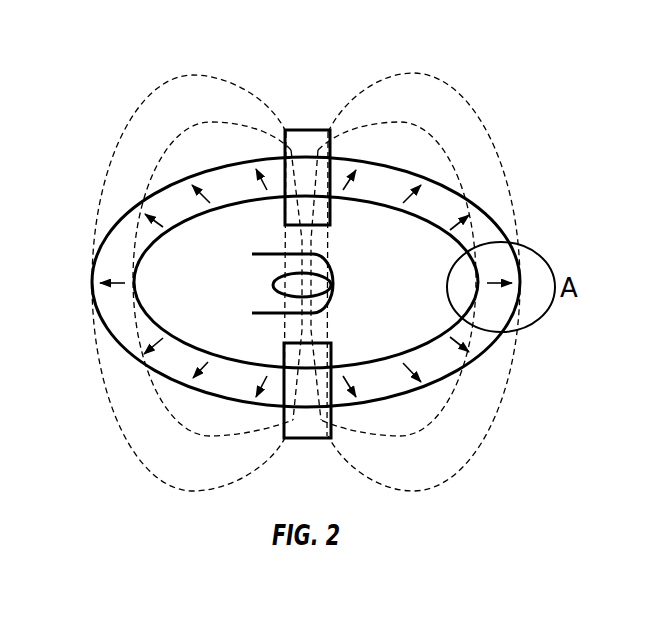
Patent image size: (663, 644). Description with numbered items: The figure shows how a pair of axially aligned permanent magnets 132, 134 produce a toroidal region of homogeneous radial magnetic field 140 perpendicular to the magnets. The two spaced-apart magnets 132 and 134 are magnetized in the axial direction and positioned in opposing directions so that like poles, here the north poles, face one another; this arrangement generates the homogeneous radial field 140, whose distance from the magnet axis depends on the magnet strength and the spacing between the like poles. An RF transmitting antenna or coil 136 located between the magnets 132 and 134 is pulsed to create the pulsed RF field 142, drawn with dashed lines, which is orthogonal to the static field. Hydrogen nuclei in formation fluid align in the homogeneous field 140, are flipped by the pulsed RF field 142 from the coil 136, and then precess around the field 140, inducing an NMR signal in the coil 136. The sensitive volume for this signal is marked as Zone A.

The magnet 132 is at (297, 130).
The magnet 134 is at (295, 438).
The RF coil 136 is at (334, 294).
The toroidal region of homogeneous radial magnetic field 140 is at (492, 343).
The pulsed RF field 142 is at (472, 455).